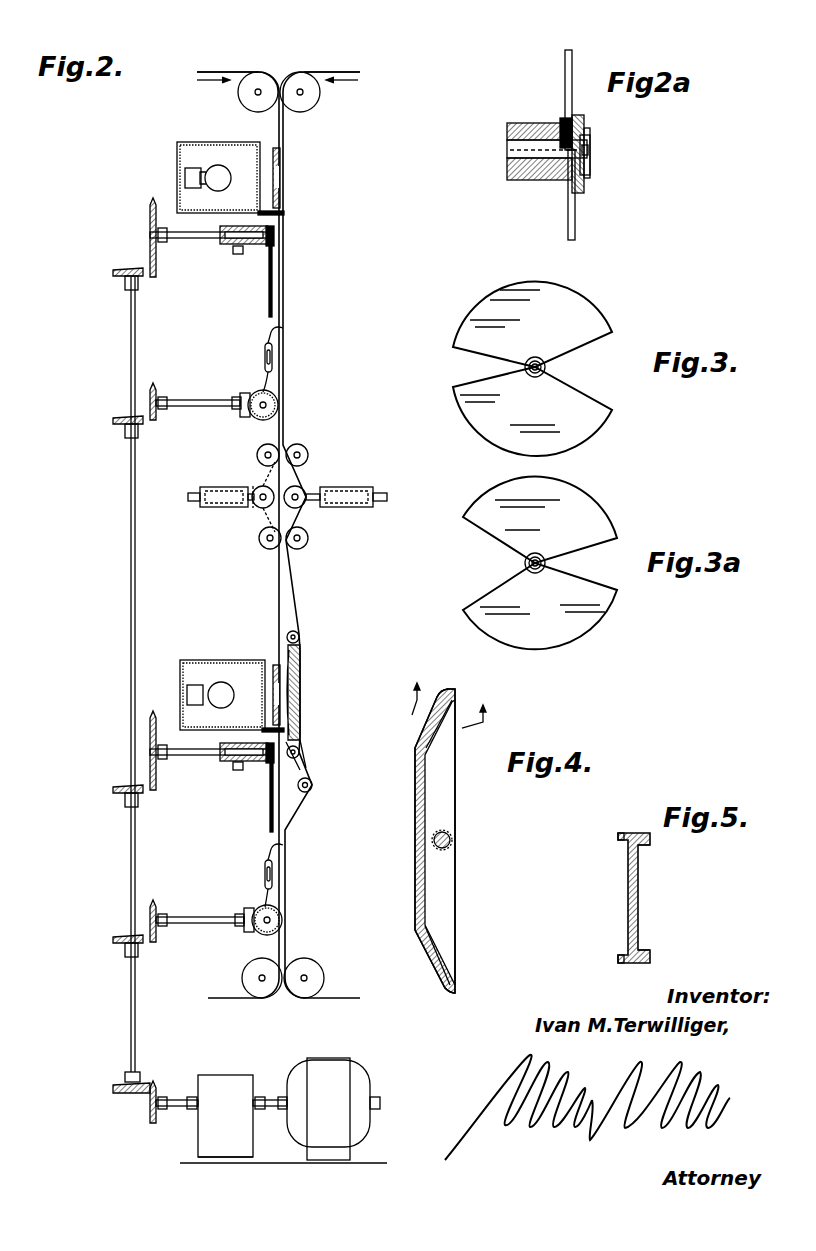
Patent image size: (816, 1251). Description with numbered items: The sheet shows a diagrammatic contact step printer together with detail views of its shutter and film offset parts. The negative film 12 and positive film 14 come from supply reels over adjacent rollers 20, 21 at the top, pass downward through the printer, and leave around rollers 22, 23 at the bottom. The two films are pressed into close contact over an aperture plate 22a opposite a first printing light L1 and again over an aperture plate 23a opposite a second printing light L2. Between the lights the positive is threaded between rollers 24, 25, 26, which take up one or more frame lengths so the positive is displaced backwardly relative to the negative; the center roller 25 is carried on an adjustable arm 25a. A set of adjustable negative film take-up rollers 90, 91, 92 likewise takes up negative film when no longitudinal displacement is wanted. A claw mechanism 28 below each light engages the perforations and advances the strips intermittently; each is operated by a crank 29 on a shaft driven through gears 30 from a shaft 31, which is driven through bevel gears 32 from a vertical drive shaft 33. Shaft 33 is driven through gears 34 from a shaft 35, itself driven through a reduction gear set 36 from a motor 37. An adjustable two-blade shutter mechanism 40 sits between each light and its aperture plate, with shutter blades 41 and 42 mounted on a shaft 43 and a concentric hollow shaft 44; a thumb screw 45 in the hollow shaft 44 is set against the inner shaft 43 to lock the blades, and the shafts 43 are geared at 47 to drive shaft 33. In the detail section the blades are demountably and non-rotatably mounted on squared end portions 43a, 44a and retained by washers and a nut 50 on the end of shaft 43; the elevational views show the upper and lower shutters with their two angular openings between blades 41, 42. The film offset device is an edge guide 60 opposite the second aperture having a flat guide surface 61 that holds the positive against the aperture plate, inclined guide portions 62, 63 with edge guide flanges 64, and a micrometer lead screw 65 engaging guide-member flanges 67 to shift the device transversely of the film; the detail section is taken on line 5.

In FIG. 2, the negative film 12 is at (217, 71).
In FIG. 2, the positive film 14 is at (330, 71).
In FIG. 2, the roller 20 is at (238, 96).
In FIG. 2, the roller 21 is at (320, 98).
In FIG. 2, the roller 22 is at (242, 976).
In FIG. 2, the roller 23 is at (318, 968).
In FIG. 2, the aperture plate 22a is at (282, 160).
In FIG. 2, the aperture plate 23a is at (272, 668).
In FIG. 2, the roller 24 is at (305, 451).
In FIG. 2, the center roller 25 is at (306, 492).
In FIG. 2, the adjustable arm 25a is at (320, 496).
In FIG. 2, the roller 26 is at (309, 539).
In FIG. 2, the claw mechanism 28 is at (262, 354).
In FIG. 2, the crank 29 is at (257, 412).
In FIG. 2, the gears 30 is at (258, 392).
In FIG. 2, the shaft 31 is at (197, 400).
In FIG. 2, the bevel gears 32 is at (153, 422).
In FIG. 2, the vertical drive shaft 33 is at (130, 584).
In FIG. 2, the gears 34 is at (146, 1090).
In FIG. 2, the shaft 35 is at (178, 1100).
In FIG. 2, the reduction gear set 36 is at (217, 1080).
In FIG. 2, the motor 37 is at (337, 1065).
In FIG. 2, the two-blade shutter mechanism 40 is at (266, 245).
In FIG. 2, the shutter blade 41 is at (286, 213).
In FIG. 3, the shutter blade 41 is at (577, 312).
In FIG. 3A, the shutter blade 41 is at (603, 512).
In FIG. 2, the shutter blade 42 is at (273, 276).
In FIG. 3, the shutter blade 42 is at (587, 425).
In FIG. 3A, the shutter blade 42 is at (583, 638).
In FIG. 2, the shaft 43 is at (220, 243).
In FIG. 2A, the shaft 43 is at (513, 149).
In FIG. 2A, the squared end portion 43a is at (562, 122).
In FIG. 2, the hollow shaft 44 is at (230, 246).
In FIG. 2A, the hollow shaft 44 is at (527, 175).
In FIG. 2A, the squared end portion 44a is at (586, 140).
In FIG. 2, the thumb screw 45 is at (237, 254).
In FIG. 2, the gearing 47 is at (150, 280).
In FIG. 2A, the nut 50 is at (590, 166).
In FIG. 2, the edge guide 60 is at (299, 666).
In FIG. 4, the edge guide 60 is at (454, 837).
In FIG. 5, the edge guide 60 is at (649, 905).
In FIG. 4, the flat guide surface 61 is at (415, 812).
In FIG. 5, the flat guide surface 61 is at (628, 906).
In FIG. 4, the inclined guide portion 62 is at (430, 728).
In FIG. 4, the inclined guide portion 63 is at (436, 968).
In FIG. 4, the edge guide flange 64 is at (430, 704).
In FIG. 5, the edge guide flange 64 is at (620, 834).
In FIG. 4, the micrometer lead screw 65 is at (450, 838).
In FIG. 4, the guide-member flange 67 is at (440, 799).
In FIG. 5, the guide-member flange 67 is at (642, 851).
In FIG. 2, the negative film take-up roller 90 is at (265, 461).
In FIG. 2, the negative film take-up roller 91 is at (260, 506).
In FIG. 2, the negative film take-up roller 92 is at (267, 548).
In FIG. 4, the section line 5 is at (456, 696).
In FIG. 2, the first printing light L1 is at (212, 168).
In FIG. 2, the second printing light L2 is at (214, 686).